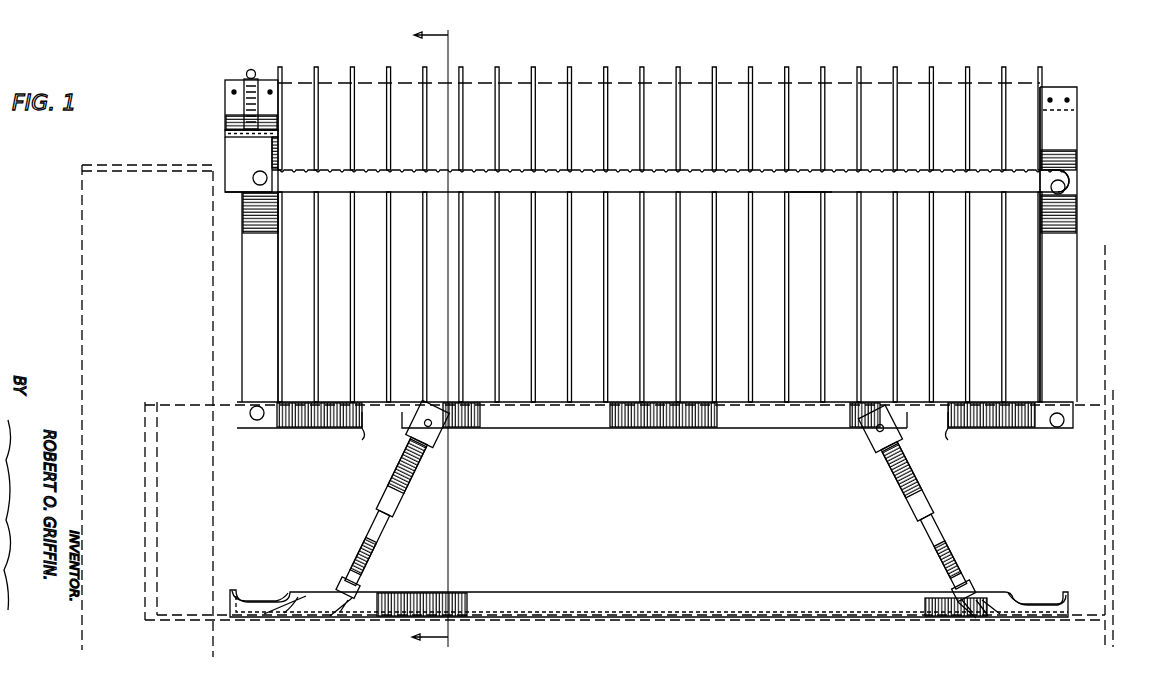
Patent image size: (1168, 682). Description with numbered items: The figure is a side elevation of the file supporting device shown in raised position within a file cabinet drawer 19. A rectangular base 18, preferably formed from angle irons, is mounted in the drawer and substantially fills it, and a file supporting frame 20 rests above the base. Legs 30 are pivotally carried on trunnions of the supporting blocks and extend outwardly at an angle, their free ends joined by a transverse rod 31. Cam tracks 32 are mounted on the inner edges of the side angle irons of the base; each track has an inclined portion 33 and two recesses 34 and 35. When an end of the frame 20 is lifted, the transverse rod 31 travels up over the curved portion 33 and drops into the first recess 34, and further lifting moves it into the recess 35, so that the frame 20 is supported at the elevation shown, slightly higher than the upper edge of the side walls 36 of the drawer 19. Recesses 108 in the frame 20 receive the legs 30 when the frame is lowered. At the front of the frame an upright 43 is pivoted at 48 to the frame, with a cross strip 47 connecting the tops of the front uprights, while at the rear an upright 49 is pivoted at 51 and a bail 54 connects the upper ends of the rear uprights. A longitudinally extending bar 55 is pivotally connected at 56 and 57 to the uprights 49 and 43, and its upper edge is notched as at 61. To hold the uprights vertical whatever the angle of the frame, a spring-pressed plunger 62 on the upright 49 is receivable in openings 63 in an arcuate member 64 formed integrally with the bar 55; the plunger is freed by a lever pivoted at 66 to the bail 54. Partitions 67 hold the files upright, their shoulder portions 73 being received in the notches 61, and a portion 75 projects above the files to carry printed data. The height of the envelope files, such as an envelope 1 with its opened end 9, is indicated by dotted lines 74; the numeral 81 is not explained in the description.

The envelope 1 is at (552, 82).
The left-hand opened end 9 is at (422, 338).
The base 18 is at (588, 597).
The file cabinet drawer 19 is at (606, 616).
The file supporting frame 20 is at (782, 428).
The legs 30 is at (382, 535).
The transverse rod 31 is at (342, 588).
The cam tracks 32 is at (411, 593).
The inclined portion 33 is at (280, 600).
The first recess 34 is at (304, 598).
The second recess 35 is at (350, 600).
The side walls 36 is at (1088, 412).
The upright 43 is at (1062, 233).
The cross strip 47 is at (1059, 92).
The pivot 48 is at (1057, 428).
The upright 49 is at (258, 322).
The pivot 51 is at (256, 421).
The bail 54 is at (232, 82).
The longitudinally extending bar 55 is at (647, 181).
The pivotal connection 56 is at (258, 184).
The pivotal connection 57 is at (1067, 187).
The notches 61 is at (1066, 172).
The spring-pressed plunger 62 is at (245, 118).
The openings 63 is at (240, 140).
The arcuate member 64 is at (246, 141).
The pivot 66 is at (560, 404).
The partitions 67 is at (754, 80).
The shoulder portions 73 is at (716, 176).
The dotted lines 74 is at (812, 84).
The projecting portion 75 is at (652, 82).
The bar edge 81 is at (840, 172).
The recesses 108 is at (946, 430).